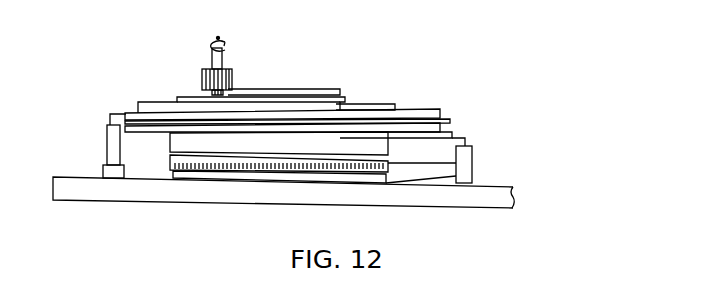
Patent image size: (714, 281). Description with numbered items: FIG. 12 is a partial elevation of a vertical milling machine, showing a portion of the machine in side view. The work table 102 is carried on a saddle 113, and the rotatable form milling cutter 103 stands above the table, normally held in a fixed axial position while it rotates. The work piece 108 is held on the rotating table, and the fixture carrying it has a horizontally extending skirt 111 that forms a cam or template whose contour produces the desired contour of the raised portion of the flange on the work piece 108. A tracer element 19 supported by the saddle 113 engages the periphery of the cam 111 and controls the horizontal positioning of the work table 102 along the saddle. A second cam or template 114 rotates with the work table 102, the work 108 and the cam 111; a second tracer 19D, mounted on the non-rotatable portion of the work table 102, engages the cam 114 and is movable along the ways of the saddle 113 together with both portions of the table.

The tracer element 19 is at (103, 140).
The tracer 19D is at (473, 162).
The work table 102 is at (150, 102).
The rotatable form milling cutter 103 is at (232, 72).
The work piece 108 is at (313, 89).
The skirt 111 is at (128, 113).
The saddle 113 is at (515, 200).
The second cam or template 114 is at (452, 133).